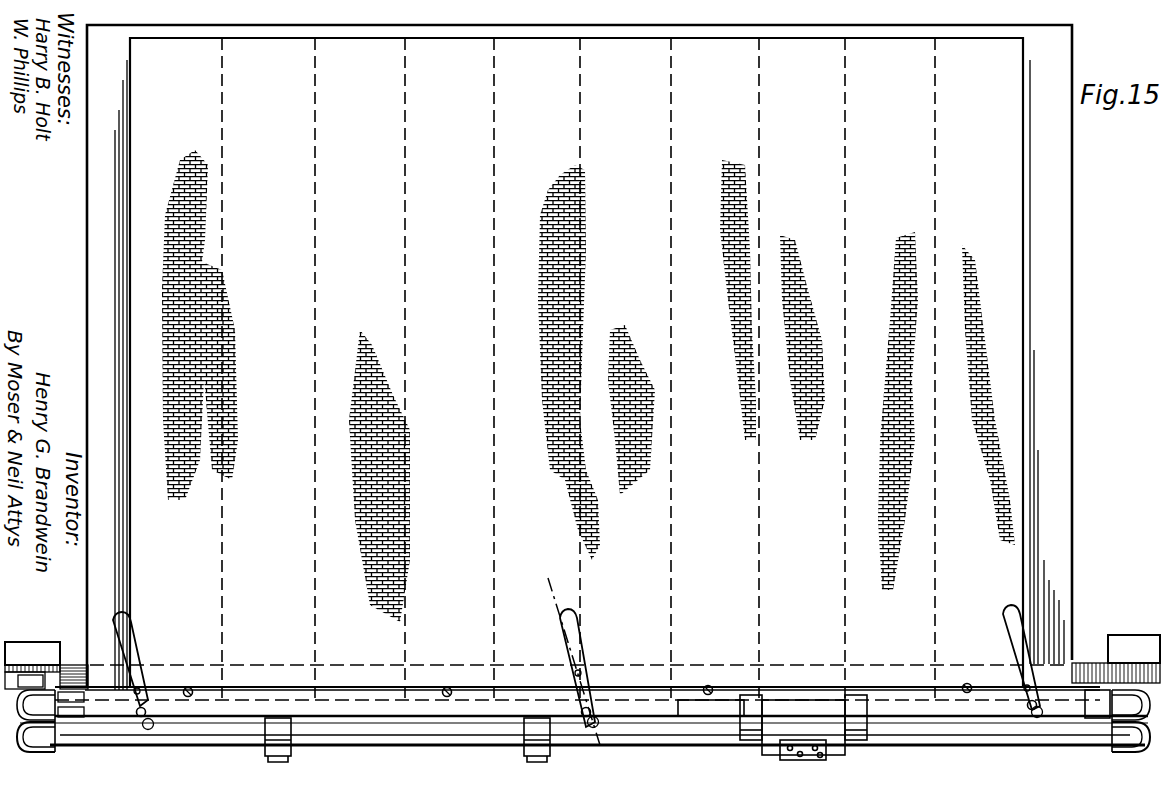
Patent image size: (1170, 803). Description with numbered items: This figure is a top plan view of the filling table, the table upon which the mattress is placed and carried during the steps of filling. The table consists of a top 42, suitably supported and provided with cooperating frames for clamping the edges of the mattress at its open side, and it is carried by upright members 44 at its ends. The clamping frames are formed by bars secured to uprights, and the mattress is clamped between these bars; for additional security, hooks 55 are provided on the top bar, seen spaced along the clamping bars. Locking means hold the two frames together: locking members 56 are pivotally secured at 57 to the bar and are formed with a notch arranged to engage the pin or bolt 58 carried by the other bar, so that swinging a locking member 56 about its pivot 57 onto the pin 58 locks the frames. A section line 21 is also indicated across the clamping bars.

The section line 21 is at (612, 775).
The top 42 is at (1036, 540).
The upright members 44 is at (50, 655).
The hooks 55 is at (190, 690).
The locking members 56 is at (128, 650).
The pivot 57 is at (140, 690).
The pin or bolt 58 is at (145, 730).